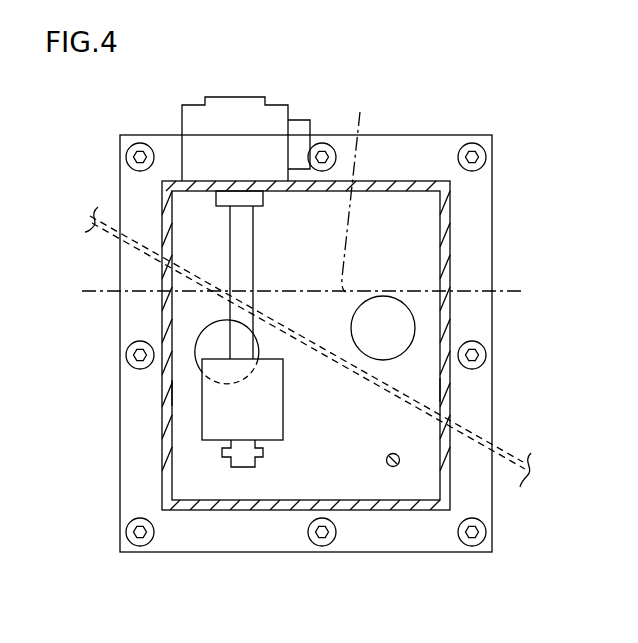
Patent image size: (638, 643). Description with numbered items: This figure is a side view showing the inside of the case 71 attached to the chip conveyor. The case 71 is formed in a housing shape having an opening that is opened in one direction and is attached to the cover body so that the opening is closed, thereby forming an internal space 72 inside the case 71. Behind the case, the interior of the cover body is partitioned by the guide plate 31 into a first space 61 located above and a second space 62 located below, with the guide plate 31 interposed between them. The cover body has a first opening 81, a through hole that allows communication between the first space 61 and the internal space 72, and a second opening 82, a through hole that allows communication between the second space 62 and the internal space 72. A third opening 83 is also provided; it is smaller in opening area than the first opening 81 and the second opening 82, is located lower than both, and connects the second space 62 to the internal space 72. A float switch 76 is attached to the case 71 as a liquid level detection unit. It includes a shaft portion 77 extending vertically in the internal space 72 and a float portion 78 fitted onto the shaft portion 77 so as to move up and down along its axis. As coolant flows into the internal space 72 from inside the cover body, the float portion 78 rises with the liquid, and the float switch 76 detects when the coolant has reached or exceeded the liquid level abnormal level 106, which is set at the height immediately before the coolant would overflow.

The case 71 is at (120, 142).
The float switch 76 is at (251, 92).
The liquid level abnormal level 106 is at (360, 192).
The internal space 72 is at (423, 263).
The shaft portion 77 is at (243, 250).
The second opening 82 is at (193, 342).
The float portion 78 is at (223, 417).
The second space 62 is at (183, 393).
The first space 61 is at (418, 390).
The first opening 81 is at (388, 300).
The guide plate 31 is at (500, 445).
The third opening 83 is at (393, 467).